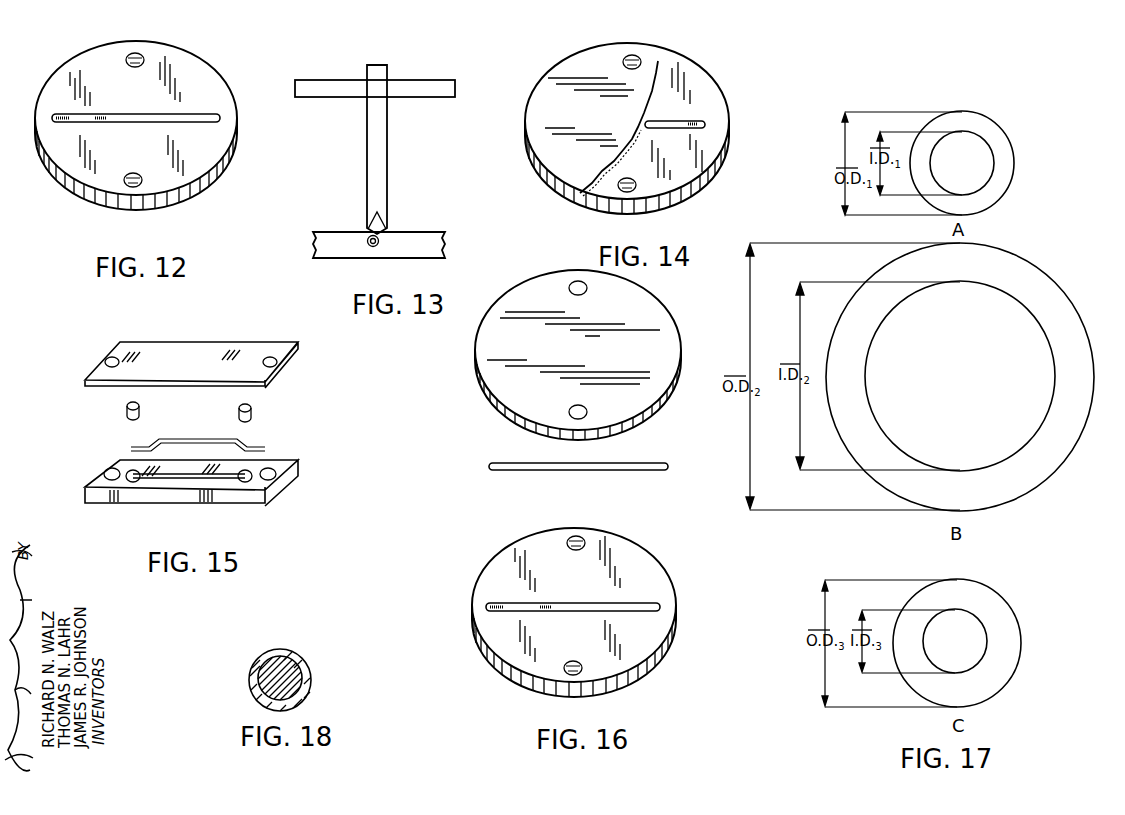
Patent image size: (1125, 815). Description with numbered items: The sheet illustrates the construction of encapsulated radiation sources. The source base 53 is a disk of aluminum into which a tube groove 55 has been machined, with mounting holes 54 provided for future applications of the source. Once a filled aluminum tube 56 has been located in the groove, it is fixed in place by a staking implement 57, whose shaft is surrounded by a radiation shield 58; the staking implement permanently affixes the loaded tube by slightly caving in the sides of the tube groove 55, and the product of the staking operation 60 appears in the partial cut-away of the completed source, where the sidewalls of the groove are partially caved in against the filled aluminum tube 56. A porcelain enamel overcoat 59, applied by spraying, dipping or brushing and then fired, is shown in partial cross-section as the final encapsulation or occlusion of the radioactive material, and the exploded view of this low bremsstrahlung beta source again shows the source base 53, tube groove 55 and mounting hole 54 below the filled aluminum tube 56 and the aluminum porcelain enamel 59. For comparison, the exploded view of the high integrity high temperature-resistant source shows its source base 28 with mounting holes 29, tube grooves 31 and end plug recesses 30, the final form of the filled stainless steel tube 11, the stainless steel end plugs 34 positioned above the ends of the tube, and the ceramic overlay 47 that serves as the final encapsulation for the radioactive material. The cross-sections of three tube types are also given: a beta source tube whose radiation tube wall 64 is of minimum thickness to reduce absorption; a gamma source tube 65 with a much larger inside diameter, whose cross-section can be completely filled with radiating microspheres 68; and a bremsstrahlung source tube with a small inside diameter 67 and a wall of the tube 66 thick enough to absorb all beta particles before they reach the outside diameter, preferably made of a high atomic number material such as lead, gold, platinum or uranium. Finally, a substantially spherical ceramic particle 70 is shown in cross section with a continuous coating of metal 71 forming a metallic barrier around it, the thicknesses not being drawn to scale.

In FIG. 15, the filled stainless steel tube 11 is at (262, 448).
In FIG. 15, the source base 28 is at (300, 476).
In FIG. 15, the mounting holes 29 is at (106, 472).
In FIG. 15, the end plug recesses 30 is at (244, 484).
In FIG. 15, the tube grooves 31 is at (182, 480).
In FIG. 15, the pins 34 is at (140, 404).
In FIG. 15, the ceramic overlay 47 is at (290, 346).
In FIG. 12, the source base 53 is at (200, 78).
In FIG. 13, the source base 53 is at (440, 246).
In FIG. 14, the source base 53 is at (690, 82).
In FIG. 16, the source base 53 is at (658, 592).
In FIG. 12, the mounting holes 54 is at (144, 56).
In FIG. 14, the mounting holes 54 is at (636, 56).
In FIG. 16, the mounting holes 54 is at (583, 540).
In FIG. 12, the tube groove 55 is at (222, 118).
In FIG. 16, the tube groove 55 is at (655, 612).
In FIG. 13, the filled aluminum tube 56 is at (382, 234).
In FIG. 14, the filled aluminum tube 56 is at (668, 124).
In FIG. 16, the filled aluminum tube 56 is at (625, 463).
In FIG. 13, the staking implement 57 is at (388, 150).
In FIG. 13, the radiation shield 58 is at (430, 79).
In FIG. 14, the porcelain enamel overcoat 59 is at (600, 60).
In FIG. 16, the porcelain enamel overcoat 59 is at (660, 342).
In FIG. 14, the product of the staking operation 60 is at (686, 135).
In FIG. 17, the radiation tube wall 64 is at (968, 122).
In FIG. 17, the tube 65 is at (1010, 262).
In FIG. 17, the wall of the tube 66 is at (982, 602).
In FIG. 17, the inside diameter 67 is at (974, 150).
In FIG. 17, the radiating microspheres 68 is at (1030, 330).
In FIG. 18, the spherical ceramic particle 70 is at (300, 677).
In FIG. 18, the coating of metal 71 is at (252, 678).